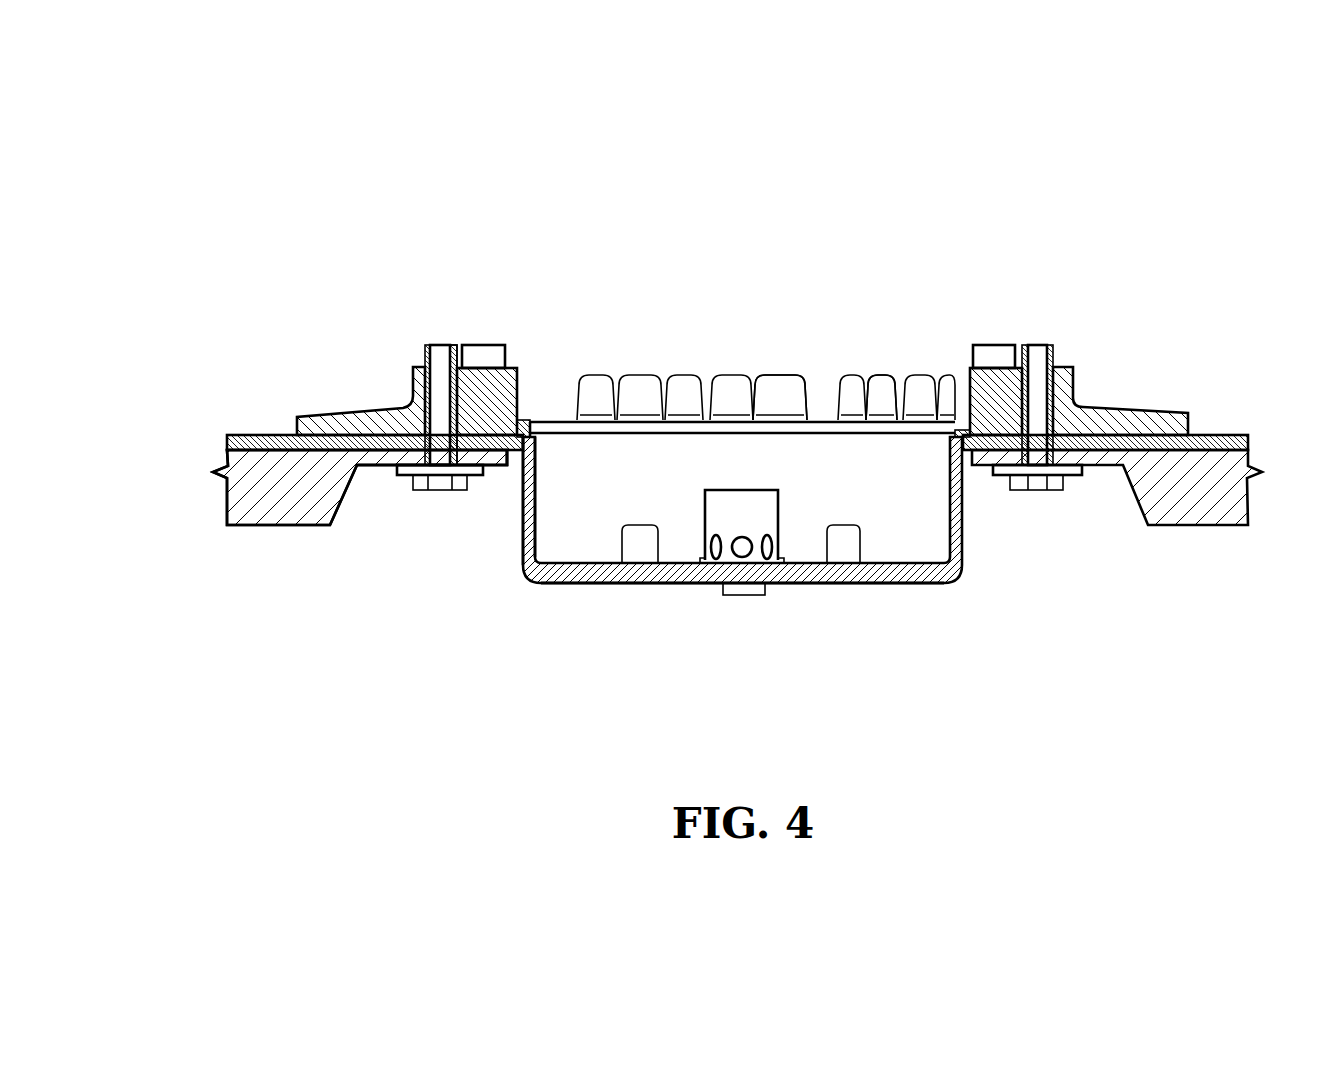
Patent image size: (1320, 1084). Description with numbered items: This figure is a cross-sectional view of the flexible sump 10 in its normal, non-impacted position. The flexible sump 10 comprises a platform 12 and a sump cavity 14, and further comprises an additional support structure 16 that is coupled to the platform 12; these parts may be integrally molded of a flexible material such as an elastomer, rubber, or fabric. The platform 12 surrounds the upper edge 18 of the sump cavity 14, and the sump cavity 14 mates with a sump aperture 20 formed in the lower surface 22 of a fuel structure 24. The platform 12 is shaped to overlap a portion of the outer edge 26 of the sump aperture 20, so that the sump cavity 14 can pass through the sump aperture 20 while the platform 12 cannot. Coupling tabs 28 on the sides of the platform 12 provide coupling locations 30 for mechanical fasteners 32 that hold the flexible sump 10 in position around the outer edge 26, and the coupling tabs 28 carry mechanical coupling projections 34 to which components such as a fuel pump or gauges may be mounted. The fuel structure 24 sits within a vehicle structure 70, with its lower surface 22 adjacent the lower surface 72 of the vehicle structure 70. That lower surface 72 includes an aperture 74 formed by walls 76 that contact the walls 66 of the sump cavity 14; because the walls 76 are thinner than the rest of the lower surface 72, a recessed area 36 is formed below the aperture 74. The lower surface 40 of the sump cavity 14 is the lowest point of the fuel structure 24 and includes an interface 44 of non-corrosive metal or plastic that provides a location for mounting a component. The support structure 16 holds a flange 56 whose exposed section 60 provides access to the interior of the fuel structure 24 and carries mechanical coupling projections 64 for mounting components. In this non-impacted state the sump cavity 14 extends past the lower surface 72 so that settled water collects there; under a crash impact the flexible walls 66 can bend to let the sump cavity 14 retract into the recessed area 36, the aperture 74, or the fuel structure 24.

The flexible sump 10 is at (605, 650).
The platform 12 is at (508, 387).
The sump cavity 14 is at (517, 563).
The support structure 16 is at (371, 419).
The upper edge 18 is at (960, 430).
The sump aperture 20 is at (533, 440).
The lower surface 22 is at (1210, 437).
The fuel structure 24 is at (1228, 437).
The outer edge 26 is at (977, 463).
The coupling tabs 28 is at (456, 350).
The coupling locations 30 is at (442, 350).
The mechanical fasteners 32 is at (1047, 467).
The mechanical coupling projections 34 is at (492, 357).
The recessed area 36 is at (430, 512).
The lower surface 40 is at (857, 587).
The interface 44 is at (717, 510).
The flange 56 is at (815, 390).
The exposed section 60 is at (893, 385).
The mechanical coupling projections 64 is at (745, 392).
The walls 66 is at (520, 500).
The vehicle structure 70 is at (237, 503).
The lower surface 72 is at (260, 513).
The aperture 74 is at (510, 467).
The walls 76 is at (497, 460).